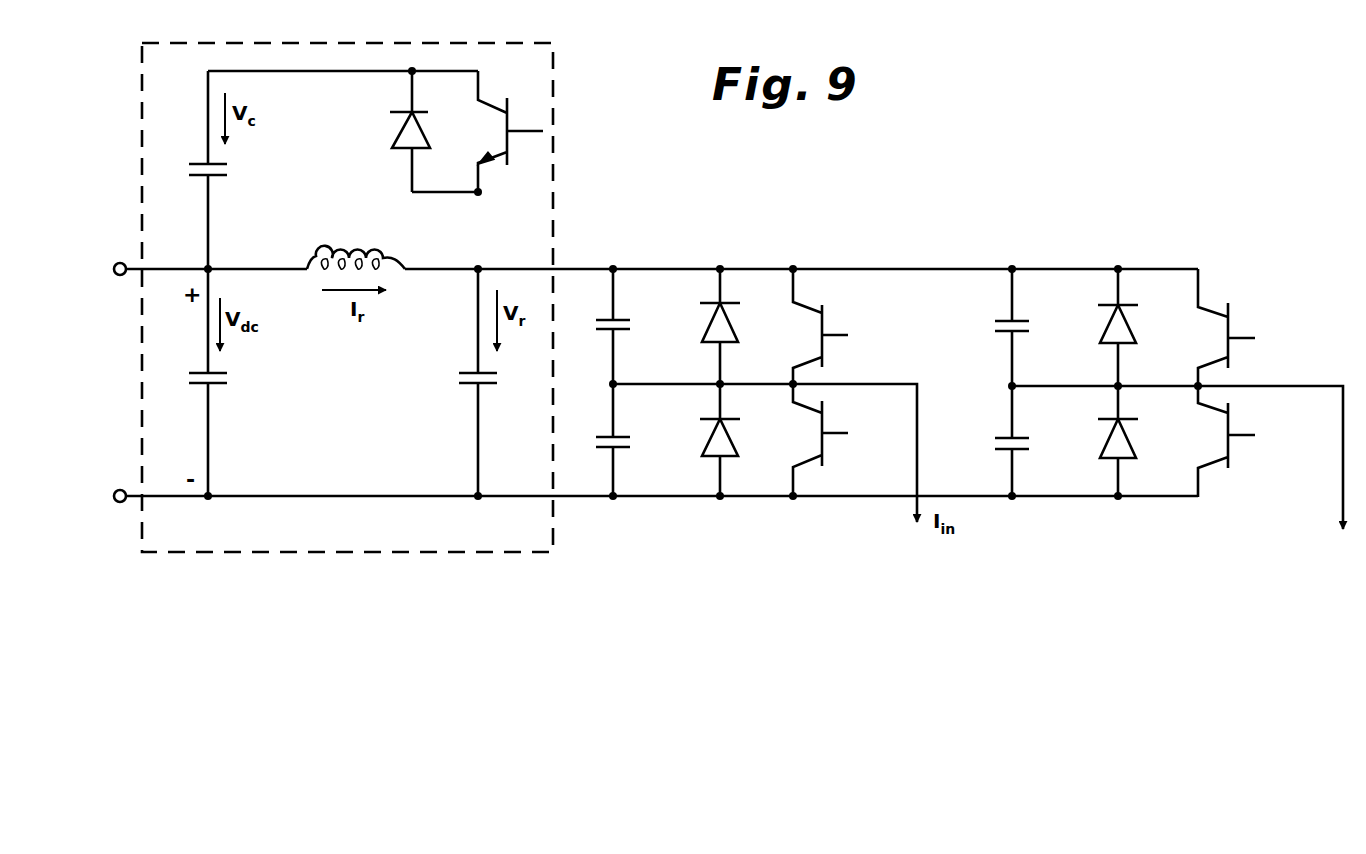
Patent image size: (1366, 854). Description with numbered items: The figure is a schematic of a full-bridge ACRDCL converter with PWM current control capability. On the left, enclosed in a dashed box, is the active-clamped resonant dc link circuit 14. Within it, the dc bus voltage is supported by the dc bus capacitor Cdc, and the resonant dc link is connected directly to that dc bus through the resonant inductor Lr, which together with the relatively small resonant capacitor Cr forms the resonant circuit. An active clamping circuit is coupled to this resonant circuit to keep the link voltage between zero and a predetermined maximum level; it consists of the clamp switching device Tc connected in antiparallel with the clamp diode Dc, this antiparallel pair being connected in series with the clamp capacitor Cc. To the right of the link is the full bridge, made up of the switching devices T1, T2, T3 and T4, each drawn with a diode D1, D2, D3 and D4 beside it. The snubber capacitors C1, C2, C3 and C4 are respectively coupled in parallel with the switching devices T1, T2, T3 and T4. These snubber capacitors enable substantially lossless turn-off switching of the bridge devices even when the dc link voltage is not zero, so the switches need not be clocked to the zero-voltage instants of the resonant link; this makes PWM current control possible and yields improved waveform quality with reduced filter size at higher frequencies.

The active-clamped resonant dc link circuit 14 is at (553, 199).
The clamp capacitor Cc is at (196, 170).
The dc bus capacitor Cdc is at (195, 382).
The resonant capacitor Cr is at (466, 382).
The resonant inductor Lr is at (356, 243).
The clamp diode Dc is at (388, 131).
The clamp switching device Tc is at (510, 131).
The snubber capacitor C1 is at (595, 326).
The snubber capacitor C2 is at (595, 440).
The snubber capacitor C3 is at (992, 327).
The snubber capacitor C4 is at (992, 441).
The diode D1 is at (700, 326).
The diode D2 is at (700, 440).
The diode D3 is at (1096, 327).
The diode D4 is at (1096, 441).
The full-bridge switching device T1 is at (830, 326).
The full-bridge switching device T2 is at (833, 440).
The full-bridge switching device T3 is at (1235, 327).
The full-bridge switching device T4 is at (1238, 441).